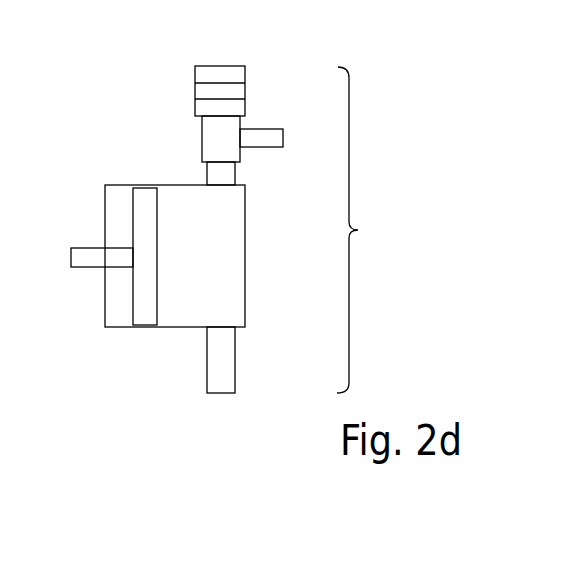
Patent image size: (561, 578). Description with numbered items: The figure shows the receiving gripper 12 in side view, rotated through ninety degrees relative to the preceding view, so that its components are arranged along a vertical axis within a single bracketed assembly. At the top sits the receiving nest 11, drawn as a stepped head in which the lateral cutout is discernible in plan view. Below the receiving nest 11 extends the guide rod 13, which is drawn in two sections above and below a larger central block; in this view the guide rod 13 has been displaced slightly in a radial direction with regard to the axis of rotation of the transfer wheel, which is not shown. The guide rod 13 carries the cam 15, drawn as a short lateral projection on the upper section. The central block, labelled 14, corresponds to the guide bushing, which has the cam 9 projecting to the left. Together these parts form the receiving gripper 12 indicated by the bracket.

The cam 9 is at (85, 258).
The receiving nest 11 is at (215, 75).
The receiving gripper 12 is at (366, 230).
The guide rod 13 is at (217, 175).
The valve body 14 is at (218, 258).
The cam 15 is at (270, 137).